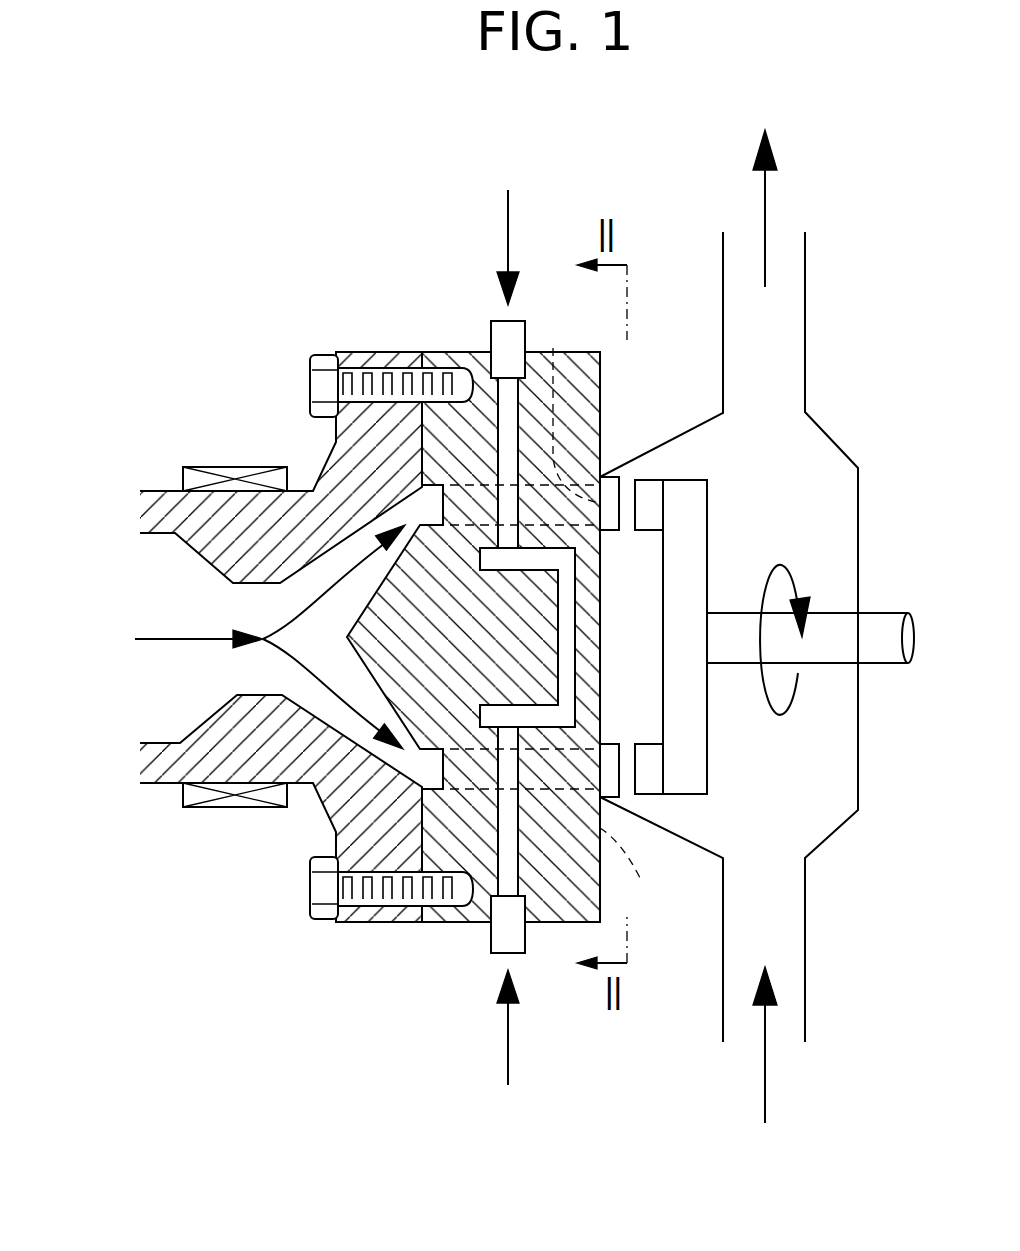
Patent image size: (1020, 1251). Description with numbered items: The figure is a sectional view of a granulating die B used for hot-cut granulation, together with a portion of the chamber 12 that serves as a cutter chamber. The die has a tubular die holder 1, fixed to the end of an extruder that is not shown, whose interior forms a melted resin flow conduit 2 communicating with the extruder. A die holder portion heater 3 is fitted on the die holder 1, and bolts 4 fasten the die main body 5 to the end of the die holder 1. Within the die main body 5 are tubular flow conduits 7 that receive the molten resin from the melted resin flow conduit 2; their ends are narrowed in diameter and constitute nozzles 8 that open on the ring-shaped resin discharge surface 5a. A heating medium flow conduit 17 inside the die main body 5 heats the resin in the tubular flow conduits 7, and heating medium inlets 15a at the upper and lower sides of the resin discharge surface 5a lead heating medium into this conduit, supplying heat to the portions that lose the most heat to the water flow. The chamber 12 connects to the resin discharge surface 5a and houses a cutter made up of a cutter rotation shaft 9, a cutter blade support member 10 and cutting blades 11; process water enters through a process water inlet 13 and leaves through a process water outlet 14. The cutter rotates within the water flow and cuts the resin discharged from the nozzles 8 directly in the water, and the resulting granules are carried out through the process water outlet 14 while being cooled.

The die holder 1 is at (143, 512).
The melted resin flow conduit 2 is at (153, 641).
The die holder portion heater 3 is at (207, 810).
The bolts 4 is at (305, 385).
The die main body 5 is at (470, 350).
The resin discharge surface 5a is at (620, 532).
The tubular flow conduits 7 is at (603, 615).
The nozzles 8 is at (628, 480).
The cutter rotation shaft 9 is at (873, 627).
The cutter blade support member 10 is at (690, 733).
The cutting blades 11 is at (650, 483).
The chamber 12 is at (827, 432).
The process water inlet 13 is at (765, 1068).
The process water outlet 14 is at (765, 205).
The heating medium inlets 15a is at (508, 639).
The heating medium flow conduit 17 is at (327, 790).
The granulating die B is at (610, 362).